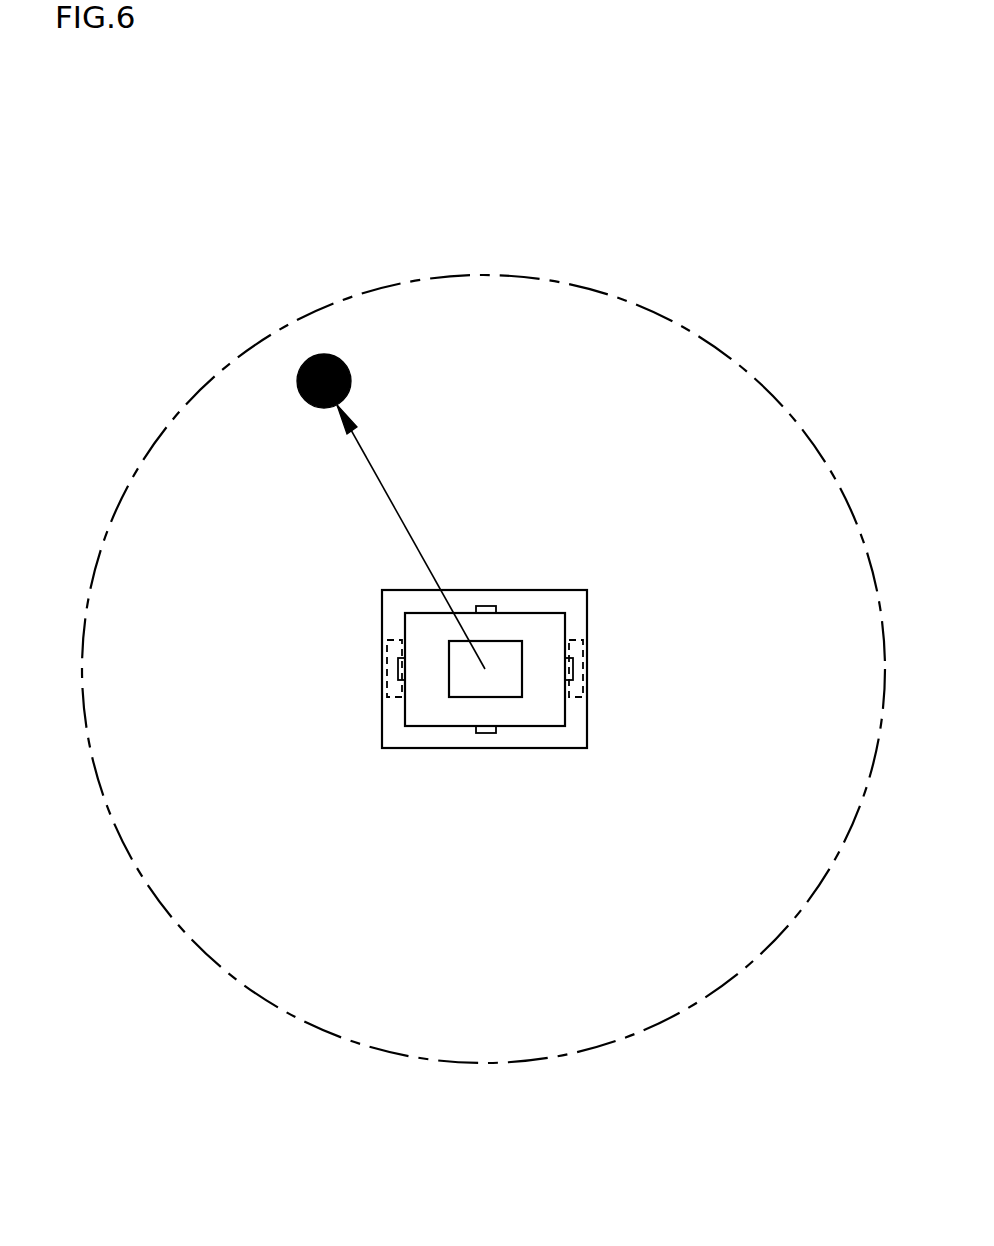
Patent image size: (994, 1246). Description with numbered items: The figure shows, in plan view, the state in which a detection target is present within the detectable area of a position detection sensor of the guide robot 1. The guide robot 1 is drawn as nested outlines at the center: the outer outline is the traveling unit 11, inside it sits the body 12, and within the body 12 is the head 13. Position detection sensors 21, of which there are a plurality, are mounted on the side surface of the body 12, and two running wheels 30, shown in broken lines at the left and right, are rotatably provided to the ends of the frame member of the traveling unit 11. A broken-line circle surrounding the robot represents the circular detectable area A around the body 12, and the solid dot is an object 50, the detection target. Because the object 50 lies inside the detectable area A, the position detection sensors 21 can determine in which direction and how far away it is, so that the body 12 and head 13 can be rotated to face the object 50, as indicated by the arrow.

The detectable area A is at (700, 377).
The guide robot 1 is at (598, 568).
The traveling unit 11 is at (590, 727).
The body 12 is at (450, 727).
The head 13 is at (512, 697).
The position detection sensor 21 is at (486, 606).
The running wheel 30 is at (387, 657).
The object 50 is at (303, 362).